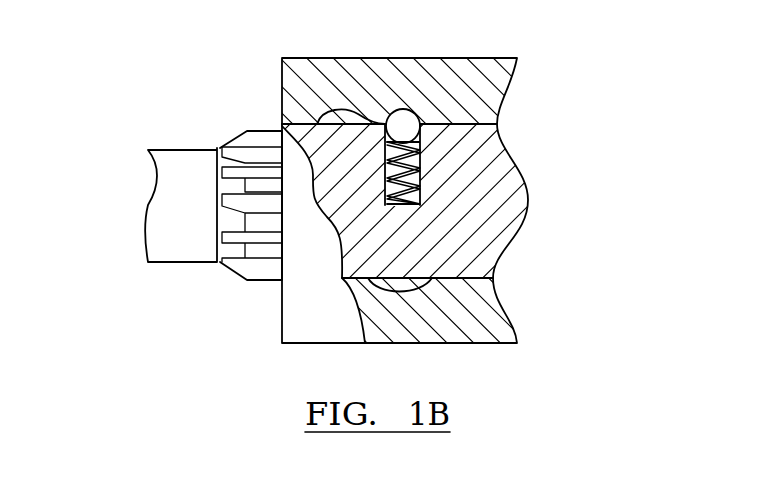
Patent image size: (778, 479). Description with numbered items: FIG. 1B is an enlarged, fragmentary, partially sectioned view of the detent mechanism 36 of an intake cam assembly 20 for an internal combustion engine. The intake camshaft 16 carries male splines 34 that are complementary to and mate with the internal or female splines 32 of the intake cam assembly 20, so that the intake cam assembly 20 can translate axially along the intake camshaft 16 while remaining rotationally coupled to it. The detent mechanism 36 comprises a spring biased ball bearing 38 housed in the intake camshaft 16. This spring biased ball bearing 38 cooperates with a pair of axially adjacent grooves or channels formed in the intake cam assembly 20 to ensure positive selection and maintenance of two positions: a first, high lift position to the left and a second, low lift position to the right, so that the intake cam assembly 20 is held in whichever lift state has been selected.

The intake camshaft 16 is at (147, 207).
The intake cam assembly 20 is at (399, 177).
The internal or female splines 32 is at (456, 290).
The male splines 34 is at (253, 257).
The detent mechanism 36 is at (411, 47).
The spring biased ball bearing 38 is at (403, 120).